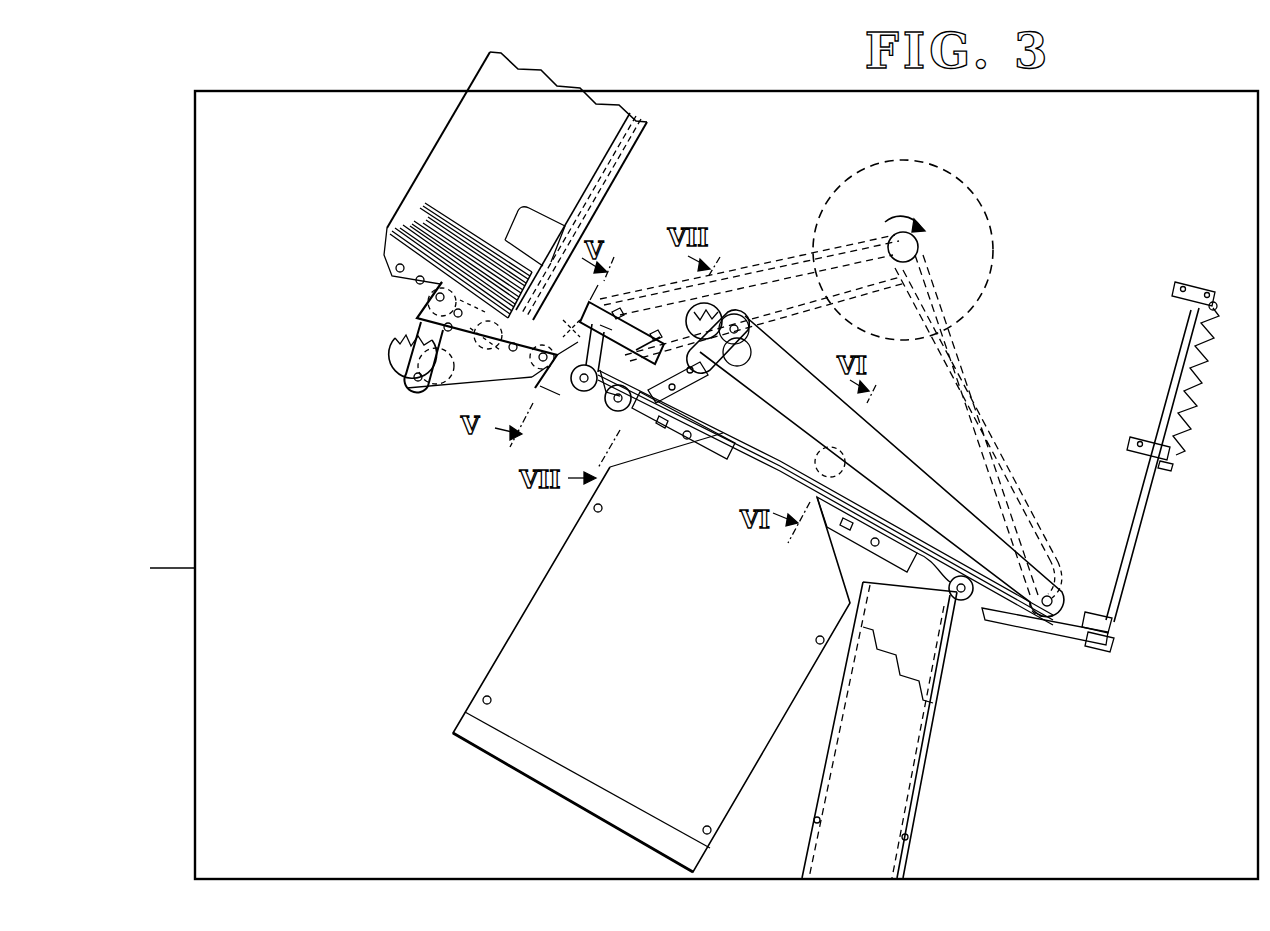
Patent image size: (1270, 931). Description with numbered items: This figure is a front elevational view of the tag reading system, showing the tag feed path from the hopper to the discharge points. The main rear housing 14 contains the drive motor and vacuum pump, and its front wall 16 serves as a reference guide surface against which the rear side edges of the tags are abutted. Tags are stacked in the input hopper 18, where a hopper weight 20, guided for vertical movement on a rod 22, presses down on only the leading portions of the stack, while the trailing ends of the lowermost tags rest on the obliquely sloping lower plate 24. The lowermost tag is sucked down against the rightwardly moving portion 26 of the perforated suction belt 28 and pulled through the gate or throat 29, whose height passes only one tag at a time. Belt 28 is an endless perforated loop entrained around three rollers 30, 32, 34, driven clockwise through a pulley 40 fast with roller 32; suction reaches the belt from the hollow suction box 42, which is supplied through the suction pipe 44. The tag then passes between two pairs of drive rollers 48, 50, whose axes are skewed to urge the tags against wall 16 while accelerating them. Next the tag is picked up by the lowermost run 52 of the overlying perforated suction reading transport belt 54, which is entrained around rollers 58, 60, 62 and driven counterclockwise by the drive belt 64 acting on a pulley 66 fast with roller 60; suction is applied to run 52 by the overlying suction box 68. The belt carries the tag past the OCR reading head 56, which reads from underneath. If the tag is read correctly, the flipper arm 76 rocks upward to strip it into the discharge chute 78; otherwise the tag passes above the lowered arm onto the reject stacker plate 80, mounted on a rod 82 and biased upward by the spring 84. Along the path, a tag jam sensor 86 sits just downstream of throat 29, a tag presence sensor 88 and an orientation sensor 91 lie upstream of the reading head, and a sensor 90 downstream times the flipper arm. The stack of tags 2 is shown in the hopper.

The sheets 2 is at (436, 204).
The main rear housing 14 is at (195, 568).
The front wall 16 is at (326, 590).
The input hopper 18 is at (502, 131).
The hopper weight 20 is at (546, 212).
The rod 22 is at (612, 178).
The lower plate 24 is at (395, 252).
The rightwardly moving portion 26 is at (600, 296).
The perforated suction belt 28 is at (455, 383).
The gate or throat 29 is at (585, 299).
The roller 30 is at (428, 286).
The roller 32 is at (556, 380).
The roller 34 is at (405, 388).
The pulley 40 is at (625, 326).
The suction box 42 is at (478, 372).
The suction pipe 44 is at (603, 331).
The drive rollers 48 is at (584, 393).
The drive rollers 50 is at (618, 412).
The lowermost run 52 is at (745, 460).
The suction reading transport belt 54 is at (905, 455).
The OCR reading head 56 is at (665, 670).
The roller 58 is at (742, 318).
The roller 60 is at (1065, 590).
The roller 62 is at (681, 410).
The drive belt 64 is at (998, 432).
The pulley 66 is at (1036, 516).
The suction box 68 is at (872, 505).
The flipper arm 76 is at (955, 597).
The discharge chute 78 is at (864, 742).
The reject stacker plate 80 is at (1082, 642).
The rod 82 is at (1132, 537).
The spring 84 is at (1190, 408).
The tag jam sensor 86 is at (421, 379).
The tag presence sensor 88 is at (662, 432).
The sensor 90 is at (833, 526).
The sensor 91 is at (619, 468).